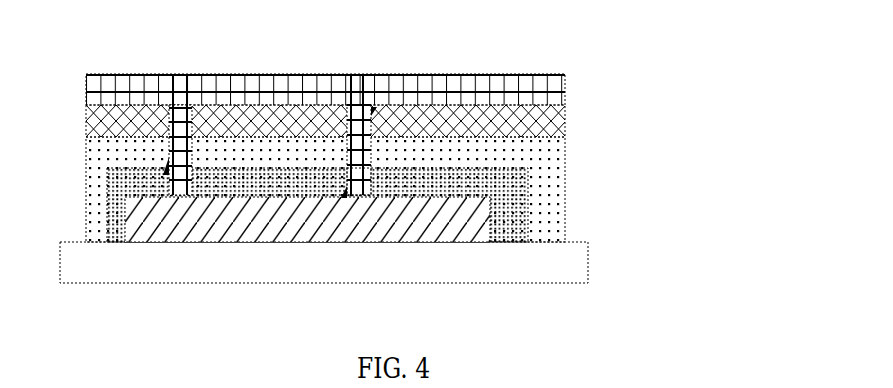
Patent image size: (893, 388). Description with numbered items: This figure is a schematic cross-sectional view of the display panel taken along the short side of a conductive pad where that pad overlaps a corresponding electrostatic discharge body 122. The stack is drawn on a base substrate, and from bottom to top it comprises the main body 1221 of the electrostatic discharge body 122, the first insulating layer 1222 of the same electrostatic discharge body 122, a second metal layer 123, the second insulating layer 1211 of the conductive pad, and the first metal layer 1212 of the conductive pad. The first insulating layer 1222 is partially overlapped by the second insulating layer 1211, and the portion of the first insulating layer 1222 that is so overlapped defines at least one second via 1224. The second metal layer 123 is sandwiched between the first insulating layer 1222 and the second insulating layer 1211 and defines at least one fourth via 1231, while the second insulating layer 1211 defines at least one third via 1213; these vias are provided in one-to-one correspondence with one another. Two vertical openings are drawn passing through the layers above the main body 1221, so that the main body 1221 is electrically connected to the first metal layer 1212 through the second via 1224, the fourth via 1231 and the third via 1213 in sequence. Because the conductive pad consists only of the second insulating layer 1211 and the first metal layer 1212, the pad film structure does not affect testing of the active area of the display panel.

The electrostatic discharge body 122 is at (419, 205).
The main body 1221 is at (525, 218).
The first insulating layer 1222 is at (525, 182).
The second via 1224 is at (347, 197).
The second metal layer 123 is at (563, 155).
The fourth via 1231 is at (163, 196).
The second insulating layer 1211 is at (565, 113).
The first metal layer 1212 is at (565, 77).
The third via 1213 is at (374, 108).